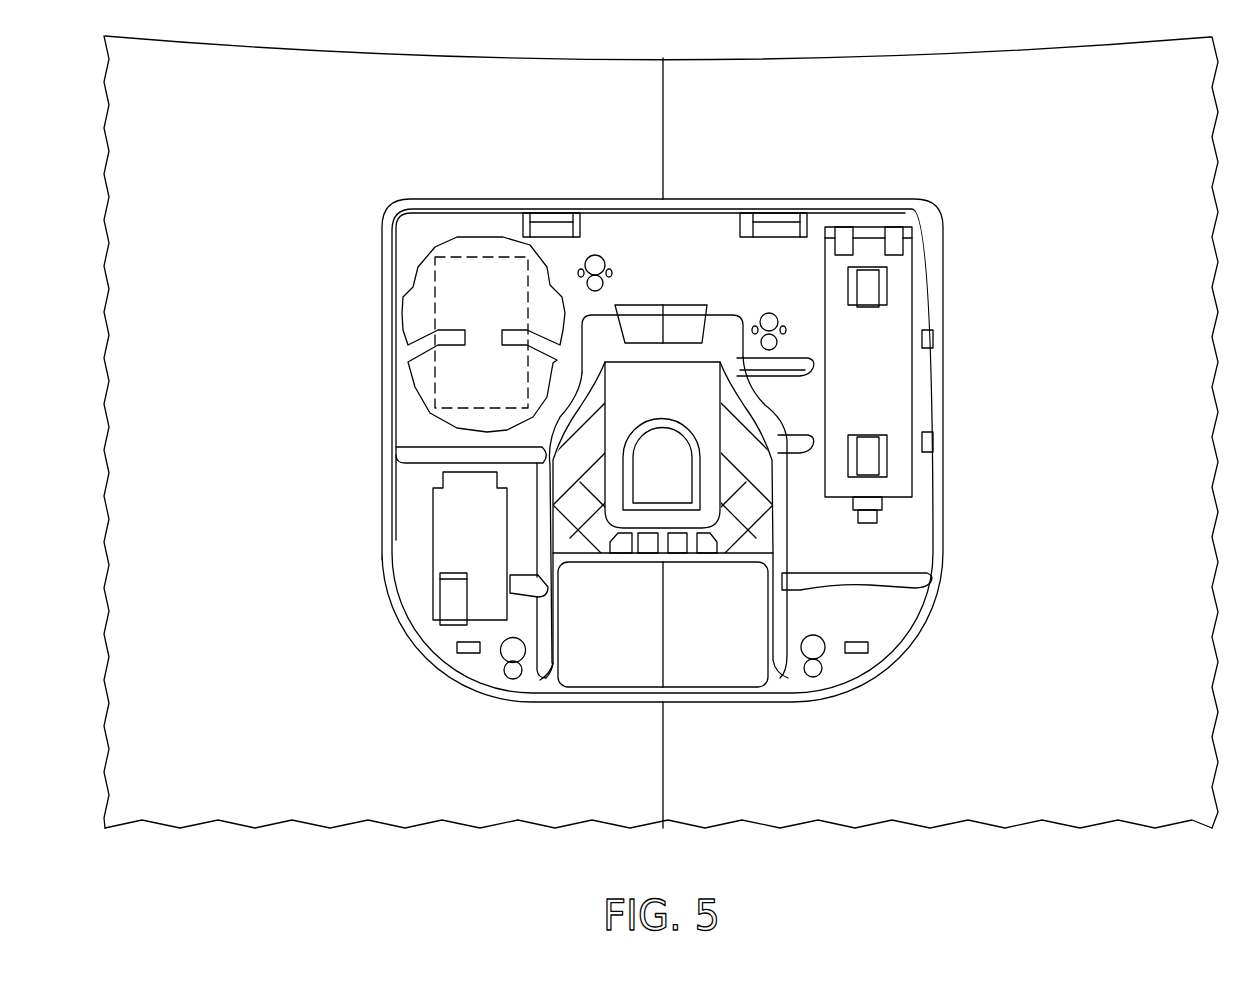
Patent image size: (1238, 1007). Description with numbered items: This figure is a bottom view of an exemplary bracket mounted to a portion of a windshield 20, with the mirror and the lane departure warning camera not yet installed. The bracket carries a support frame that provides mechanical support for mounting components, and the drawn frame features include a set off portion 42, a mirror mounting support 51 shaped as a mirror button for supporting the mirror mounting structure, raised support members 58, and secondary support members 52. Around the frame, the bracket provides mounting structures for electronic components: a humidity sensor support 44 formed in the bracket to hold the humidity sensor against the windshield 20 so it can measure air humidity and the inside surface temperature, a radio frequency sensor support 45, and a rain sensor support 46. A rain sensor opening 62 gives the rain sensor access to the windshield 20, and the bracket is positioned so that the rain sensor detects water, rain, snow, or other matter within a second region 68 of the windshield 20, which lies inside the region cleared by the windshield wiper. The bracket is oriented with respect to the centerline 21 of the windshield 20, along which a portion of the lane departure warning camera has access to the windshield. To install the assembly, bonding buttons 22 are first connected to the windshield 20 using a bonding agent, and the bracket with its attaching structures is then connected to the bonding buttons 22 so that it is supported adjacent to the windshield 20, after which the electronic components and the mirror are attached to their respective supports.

The windshield 20 is at (1195, 87).
The centerline 21 is at (665, 790).
The bonding buttons 22 is at (607, 265).
The set off portion 42 is at (652, 368).
The humidity sensor support 44 is at (448, 602).
The radio frequency sensor support 45 is at (843, 235).
The rain sensor support 46 is at (413, 345).
The mirror mounting support 51 is at (668, 490).
The secondary support members 52 is at (407, 455).
The raised support members 58 is at (553, 430).
The rain sensor opening 62 is at (795, 360).
The second region 68 is at (502, 321).